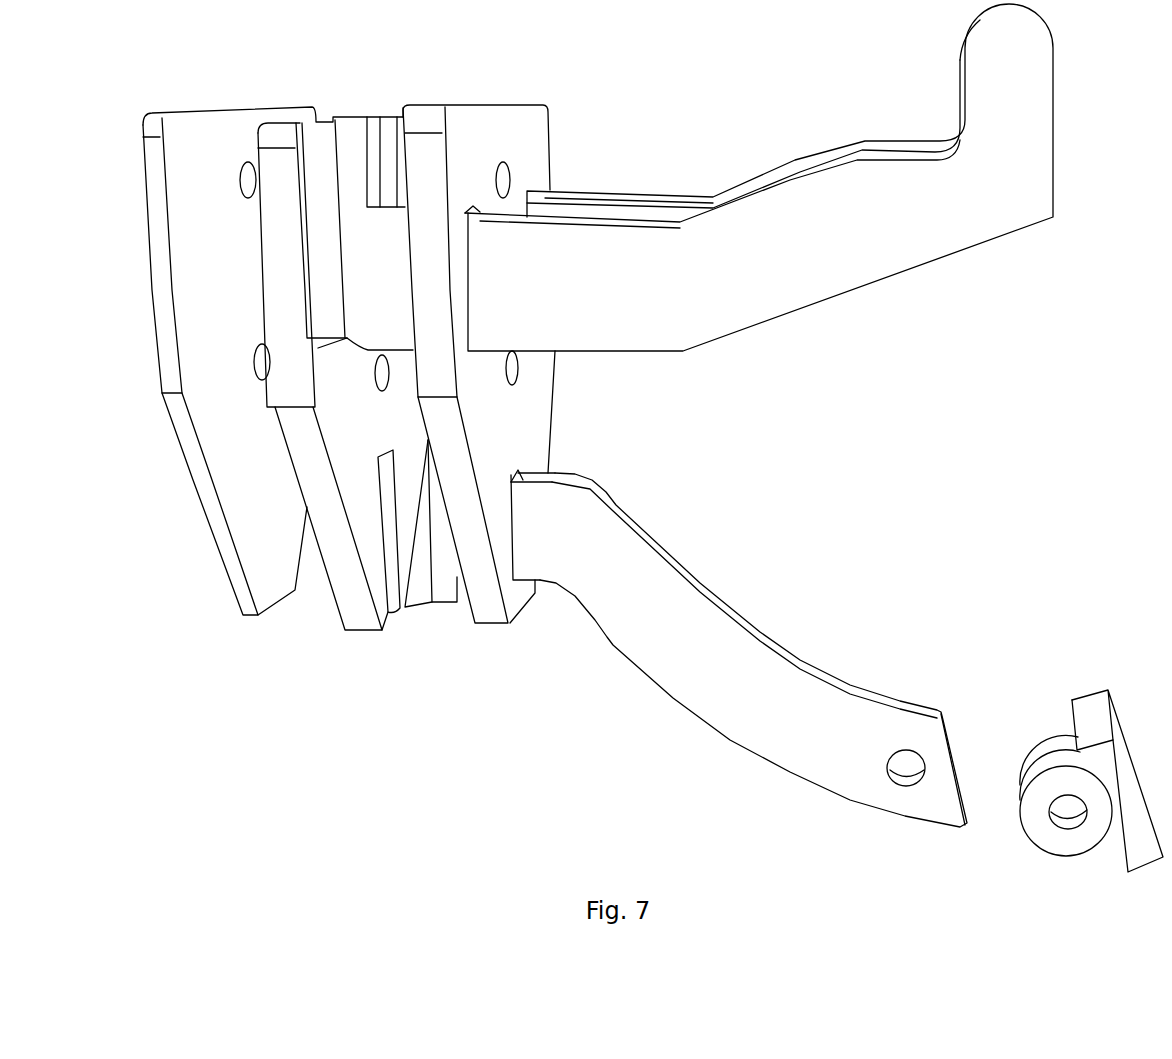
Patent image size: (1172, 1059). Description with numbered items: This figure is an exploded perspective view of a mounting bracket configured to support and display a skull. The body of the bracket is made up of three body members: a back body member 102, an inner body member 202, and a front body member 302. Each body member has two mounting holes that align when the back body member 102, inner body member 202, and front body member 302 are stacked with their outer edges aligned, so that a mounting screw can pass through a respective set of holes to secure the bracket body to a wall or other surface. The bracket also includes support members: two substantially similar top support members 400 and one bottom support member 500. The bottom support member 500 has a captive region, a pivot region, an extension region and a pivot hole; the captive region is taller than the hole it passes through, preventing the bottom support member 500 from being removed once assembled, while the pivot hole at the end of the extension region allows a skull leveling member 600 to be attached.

The back body member 102 is at (195, 121).
The inner body member 202 is at (278, 150).
The front body member 302 is at (493, 112).
The top support member 400 is at (759, 177).
The bottom support member 500 is at (738, 648).
The skull leveling member 600 is at (1091, 763).